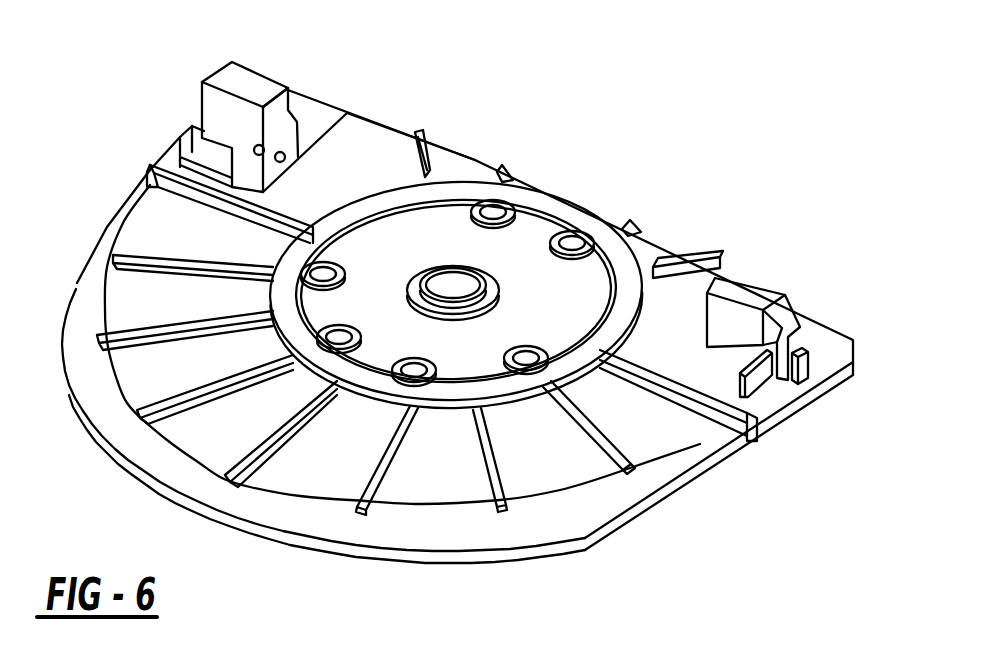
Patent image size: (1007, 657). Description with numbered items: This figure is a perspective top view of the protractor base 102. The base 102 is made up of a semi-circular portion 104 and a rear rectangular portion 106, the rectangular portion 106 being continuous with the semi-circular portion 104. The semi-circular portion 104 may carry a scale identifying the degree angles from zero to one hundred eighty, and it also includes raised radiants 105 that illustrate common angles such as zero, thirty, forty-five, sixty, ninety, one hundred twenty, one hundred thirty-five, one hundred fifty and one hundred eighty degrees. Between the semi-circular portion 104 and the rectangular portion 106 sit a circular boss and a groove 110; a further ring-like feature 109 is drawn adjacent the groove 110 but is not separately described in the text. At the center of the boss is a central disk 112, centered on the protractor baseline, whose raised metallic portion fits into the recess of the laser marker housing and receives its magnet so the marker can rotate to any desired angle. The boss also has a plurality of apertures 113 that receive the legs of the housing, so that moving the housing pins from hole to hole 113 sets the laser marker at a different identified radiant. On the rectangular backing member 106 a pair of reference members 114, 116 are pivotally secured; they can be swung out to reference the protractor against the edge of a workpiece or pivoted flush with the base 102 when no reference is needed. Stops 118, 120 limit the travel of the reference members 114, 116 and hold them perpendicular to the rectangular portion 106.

The base 102 is at (756, 456).
The semi-circular portion 104 is at (288, 508).
The raised radiants 105 is at (603, 452).
The rear rectangular portion 106 is at (825, 350).
The central hub plate 109 is at (458, 200).
The groove 110 is at (640, 245).
The central disk 112 is at (452, 291).
The apertures 113 is at (415, 372).
The reference member 114 is at (244, 82).
The reference member 116 is at (740, 297).
The stop 118 is at (185, 140).
The stop 120 is at (757, 377).